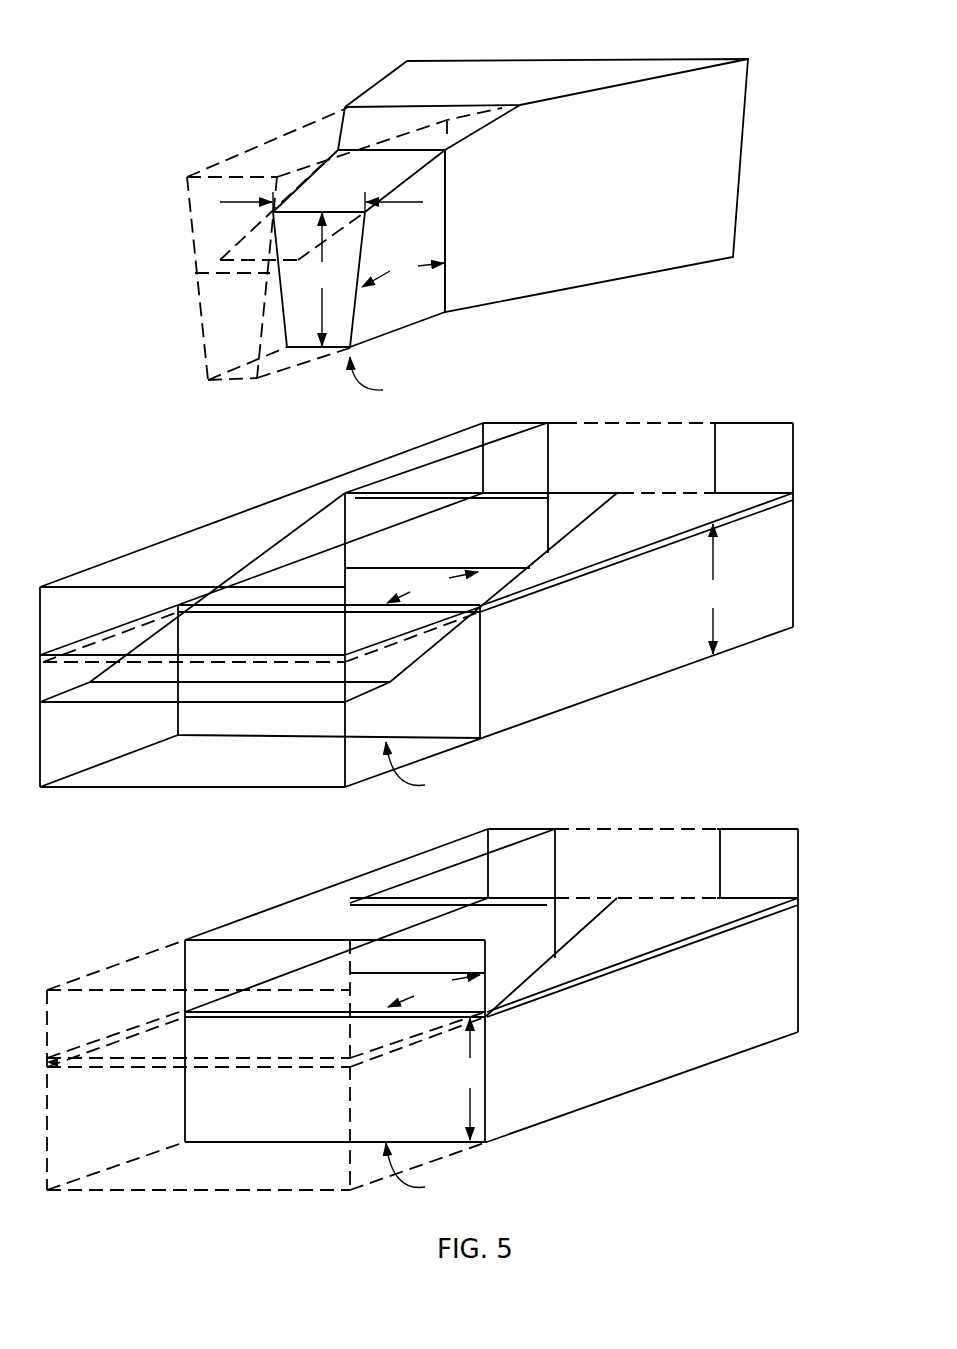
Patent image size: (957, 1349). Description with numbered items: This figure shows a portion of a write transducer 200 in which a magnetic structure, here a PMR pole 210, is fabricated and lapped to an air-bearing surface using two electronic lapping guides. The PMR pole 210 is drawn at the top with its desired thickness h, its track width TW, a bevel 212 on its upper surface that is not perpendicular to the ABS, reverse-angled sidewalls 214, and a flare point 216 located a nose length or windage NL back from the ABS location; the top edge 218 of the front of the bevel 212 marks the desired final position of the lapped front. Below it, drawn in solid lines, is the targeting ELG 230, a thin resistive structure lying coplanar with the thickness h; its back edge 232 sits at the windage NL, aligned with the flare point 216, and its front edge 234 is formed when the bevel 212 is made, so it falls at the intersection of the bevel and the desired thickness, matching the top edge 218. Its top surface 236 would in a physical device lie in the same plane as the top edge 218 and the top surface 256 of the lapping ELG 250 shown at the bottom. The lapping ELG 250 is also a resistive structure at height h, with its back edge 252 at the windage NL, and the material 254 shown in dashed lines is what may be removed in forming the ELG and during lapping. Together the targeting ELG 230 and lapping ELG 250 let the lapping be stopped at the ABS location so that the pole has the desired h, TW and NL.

The transducer 200 is at (499, 34).
The PMR pole 210 is at (745, 106).
The bevel 212 is at (313, 154).
The sidewalls 214 is at (358, 285).
The flare point 216 is at (446, 291).
The top edge 218 is at (290, 210).
The targeting ELG 230 is at (457, 617).
The back edge 232 is at (378, 567).
The front edge 234 is at (243, 602).
The top surface 236 is at (330, 578).
The lapping ELG 250 is at (472, 1021).
The back edge 252 is at (380, 972).
The removed portion (dashed) 254 is at (248, 1010).
The top surface 256 is at (333, 982).